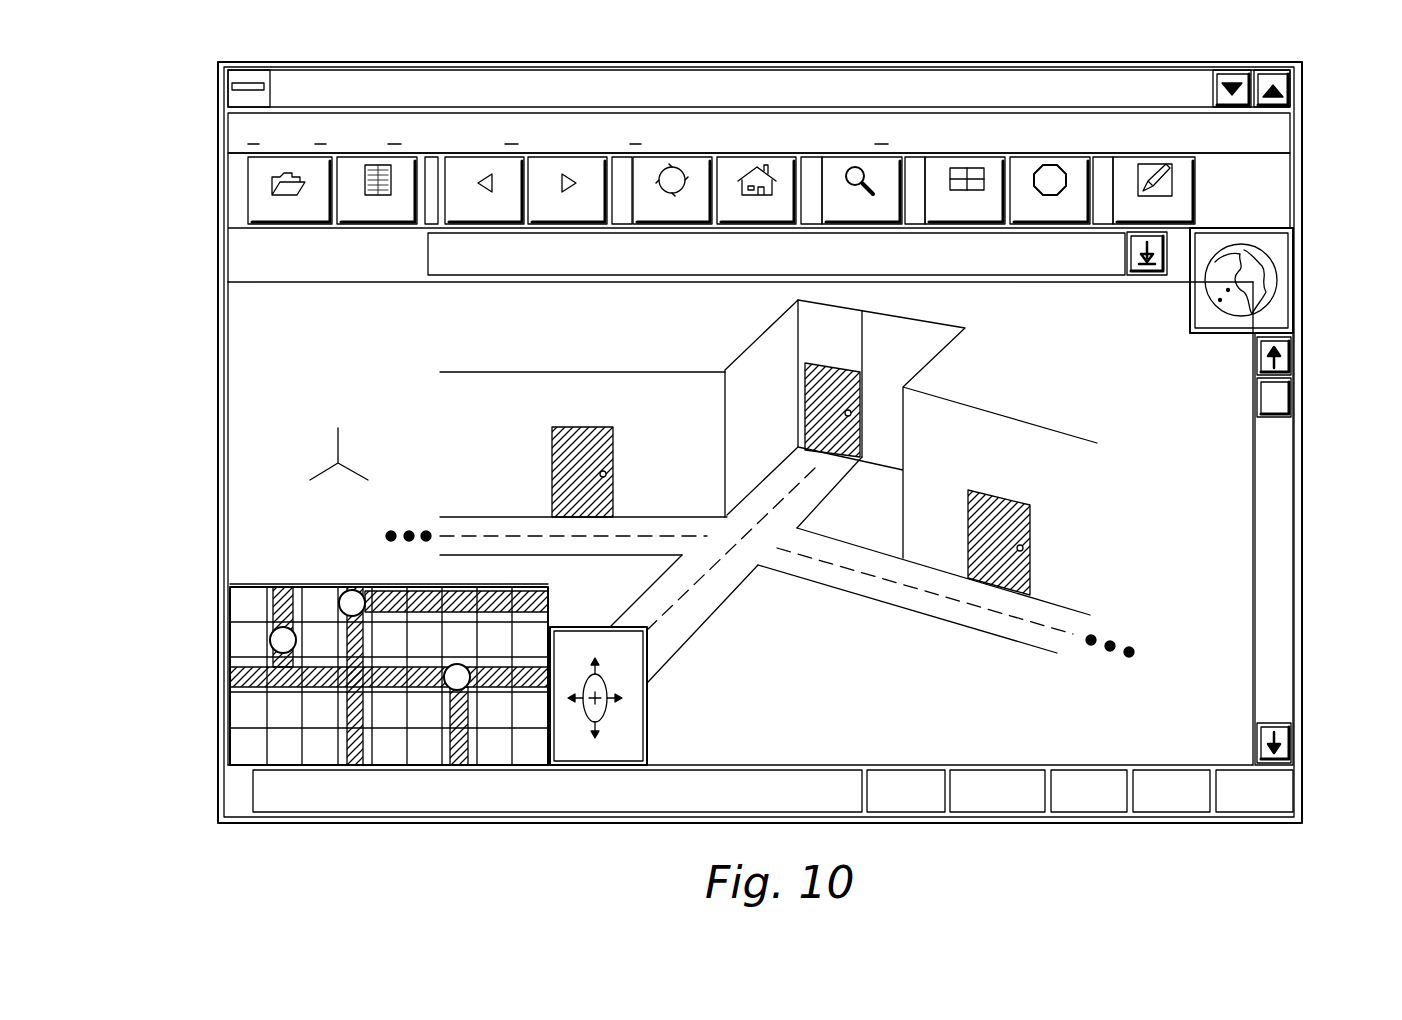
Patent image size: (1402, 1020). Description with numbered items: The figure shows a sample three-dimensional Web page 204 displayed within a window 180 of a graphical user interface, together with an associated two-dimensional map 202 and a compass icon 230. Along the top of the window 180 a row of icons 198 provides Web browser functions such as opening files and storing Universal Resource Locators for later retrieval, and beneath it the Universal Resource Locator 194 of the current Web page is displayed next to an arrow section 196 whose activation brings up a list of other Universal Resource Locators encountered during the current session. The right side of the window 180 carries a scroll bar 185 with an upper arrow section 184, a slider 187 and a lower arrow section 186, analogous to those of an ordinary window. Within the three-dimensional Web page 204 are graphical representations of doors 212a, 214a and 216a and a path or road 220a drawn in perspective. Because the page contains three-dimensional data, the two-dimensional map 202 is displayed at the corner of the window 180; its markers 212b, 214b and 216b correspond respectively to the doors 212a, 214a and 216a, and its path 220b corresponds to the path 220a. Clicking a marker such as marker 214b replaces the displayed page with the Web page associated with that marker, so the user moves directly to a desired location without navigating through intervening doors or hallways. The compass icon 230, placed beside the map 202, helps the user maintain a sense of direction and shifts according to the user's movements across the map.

The window 180 is at (178, 65).
The arrow section 184 is at (1284, 366).
The scroll bar 185 is at (1282, 577).
The arrow section 186 is at (1285, 738).
The slider 187 is at (1282, 396).
The Universal Resource Locator 194 is at (984, 257).
The arrow section 196 is at (1128, 262).
The row of icons 198 is at (240, 191).
The two-dimensional map 202 is at (248, 712).
The three-dimensional Web page 204 is at (257, 396).
The door 212a is at (1031, 541).
The marker 212b is at (470, 690).
The door 214a is at (855, 366).
The marker 214b is at (334, 596).
The door 216a is at (551, 462).
The marker 216b is at (270, 638).
The path 220a is at (693, 612).
The path 220b is at (357, 752).
The compass icon 230 is at (620, 730).